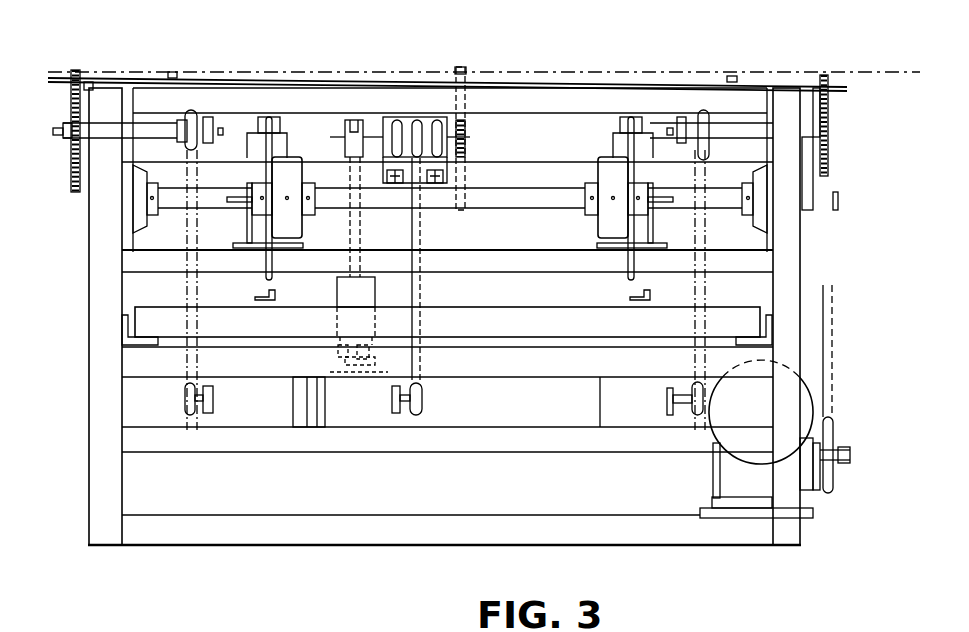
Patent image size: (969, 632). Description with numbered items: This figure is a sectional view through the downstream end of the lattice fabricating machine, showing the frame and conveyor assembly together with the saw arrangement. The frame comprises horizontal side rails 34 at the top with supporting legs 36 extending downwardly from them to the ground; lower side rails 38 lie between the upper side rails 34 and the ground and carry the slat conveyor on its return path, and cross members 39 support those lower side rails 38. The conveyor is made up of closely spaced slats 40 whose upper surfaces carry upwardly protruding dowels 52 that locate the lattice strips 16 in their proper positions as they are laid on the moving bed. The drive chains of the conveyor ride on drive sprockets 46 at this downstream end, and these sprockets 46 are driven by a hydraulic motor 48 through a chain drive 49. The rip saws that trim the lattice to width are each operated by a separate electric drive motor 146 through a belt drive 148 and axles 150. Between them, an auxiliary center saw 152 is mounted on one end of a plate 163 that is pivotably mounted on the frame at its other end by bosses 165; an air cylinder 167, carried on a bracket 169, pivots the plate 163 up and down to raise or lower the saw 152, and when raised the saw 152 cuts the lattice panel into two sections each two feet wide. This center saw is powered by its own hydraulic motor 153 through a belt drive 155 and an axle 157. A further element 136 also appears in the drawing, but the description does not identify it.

The lattice strip 16 is at (583, 75).
The horizontal side rail 34 is at (88, 82).
The supporting leg 36 is at (98, 380).
The lower side rail 38 is at (122, 338).
The cross member 39 is at (158, 370).
The slat 40 is at (333, 98).
The drive sprocket 46 is at (270, 157).
The hydraulic motor 48 is at (807, 410).
The chain drive 49 is at (834, 363).
The dowel 52 is at (173, 73).
The support 136 is at (174, 627).
The electric drive motor 146 is at (265, 412).
The belt drive 148 is at (187, 283).
The axle 150 is at (147, 130).
The auxiliary center saw 152 is at (466, 68).
The hydraulic motor 153 is at (367, 412).
The belt drive 155 is at (422, 363).
The axle 157 is at (448, 120).
The plate 163 is at (443, 152).
The boss 165 is at (400, 182).
The air cylinder 167 is at (370, 293).
The bracket 169 is at (330, 370).